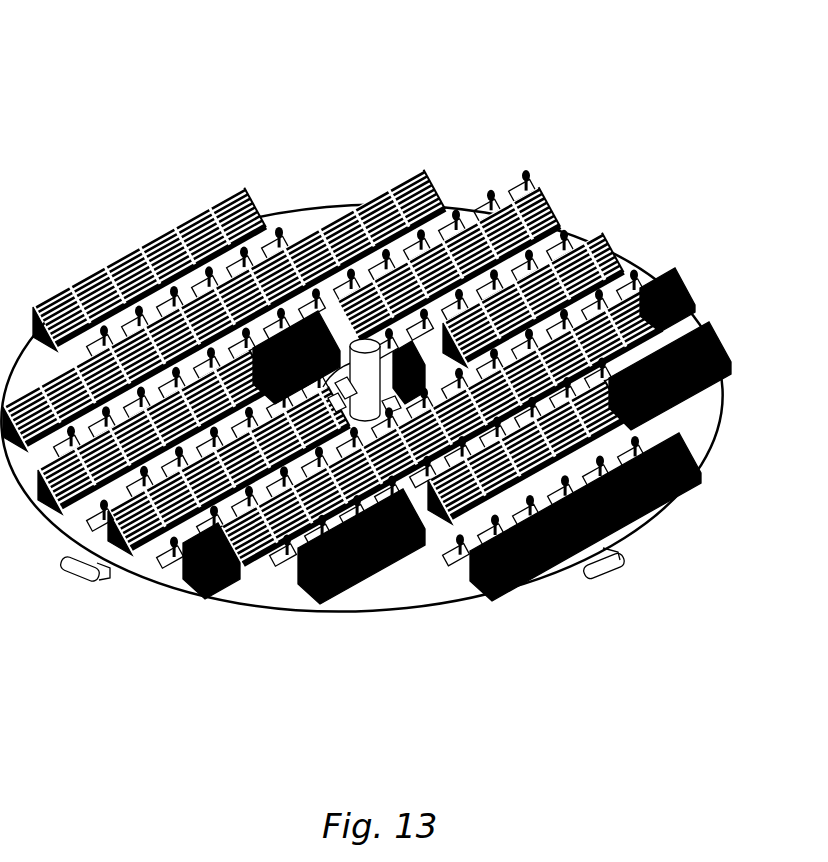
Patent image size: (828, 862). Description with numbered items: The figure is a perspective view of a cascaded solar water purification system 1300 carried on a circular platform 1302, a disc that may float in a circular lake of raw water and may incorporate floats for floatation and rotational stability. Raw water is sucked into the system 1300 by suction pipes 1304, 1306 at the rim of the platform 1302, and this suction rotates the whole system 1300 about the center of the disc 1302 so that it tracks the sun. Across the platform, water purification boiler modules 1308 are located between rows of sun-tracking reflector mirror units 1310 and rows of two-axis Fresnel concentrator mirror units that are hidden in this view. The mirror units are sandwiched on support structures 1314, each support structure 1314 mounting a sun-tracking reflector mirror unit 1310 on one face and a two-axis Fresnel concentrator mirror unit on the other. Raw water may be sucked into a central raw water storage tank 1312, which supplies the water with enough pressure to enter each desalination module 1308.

The cascaded solar water purification system 1300 is at (366, 348).
The circular platform 1302 is at (395, 578).
The suction pipe 1304 is at (88, 585).
The suction pipe 1306 is at (592, 583).
The water purification boiler module 1308 is at (262, 595).
The sun-tracking reflector mirror unit 1310 is at (146, 566).
The central raw water storage tank 1312 is at (348, 378).
The support structure 1314 is at (303, 583).